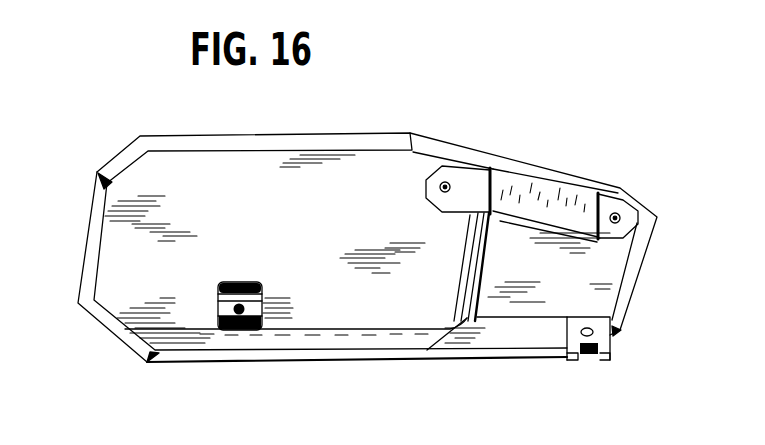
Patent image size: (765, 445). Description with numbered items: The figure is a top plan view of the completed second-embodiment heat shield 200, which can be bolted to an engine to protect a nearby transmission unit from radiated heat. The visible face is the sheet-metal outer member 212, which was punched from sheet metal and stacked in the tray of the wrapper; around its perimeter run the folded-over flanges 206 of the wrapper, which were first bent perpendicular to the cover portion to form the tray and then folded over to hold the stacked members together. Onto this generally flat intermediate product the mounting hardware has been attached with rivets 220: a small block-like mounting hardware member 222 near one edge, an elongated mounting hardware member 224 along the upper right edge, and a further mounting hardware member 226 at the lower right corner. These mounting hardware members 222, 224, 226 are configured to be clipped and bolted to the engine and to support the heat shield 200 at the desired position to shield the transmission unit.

The heat shield 200 is at (525, 143).
The flanges 206 is at (293, 148).
The outer member 212 is at (286, 219).
The rivets 220 is at (440, 187).
The mounting hardware member 222 is at (255, 282).
The mounting hardware member 224 is at (562, 198).
The mounting hardware member 226 is at (607, 361).